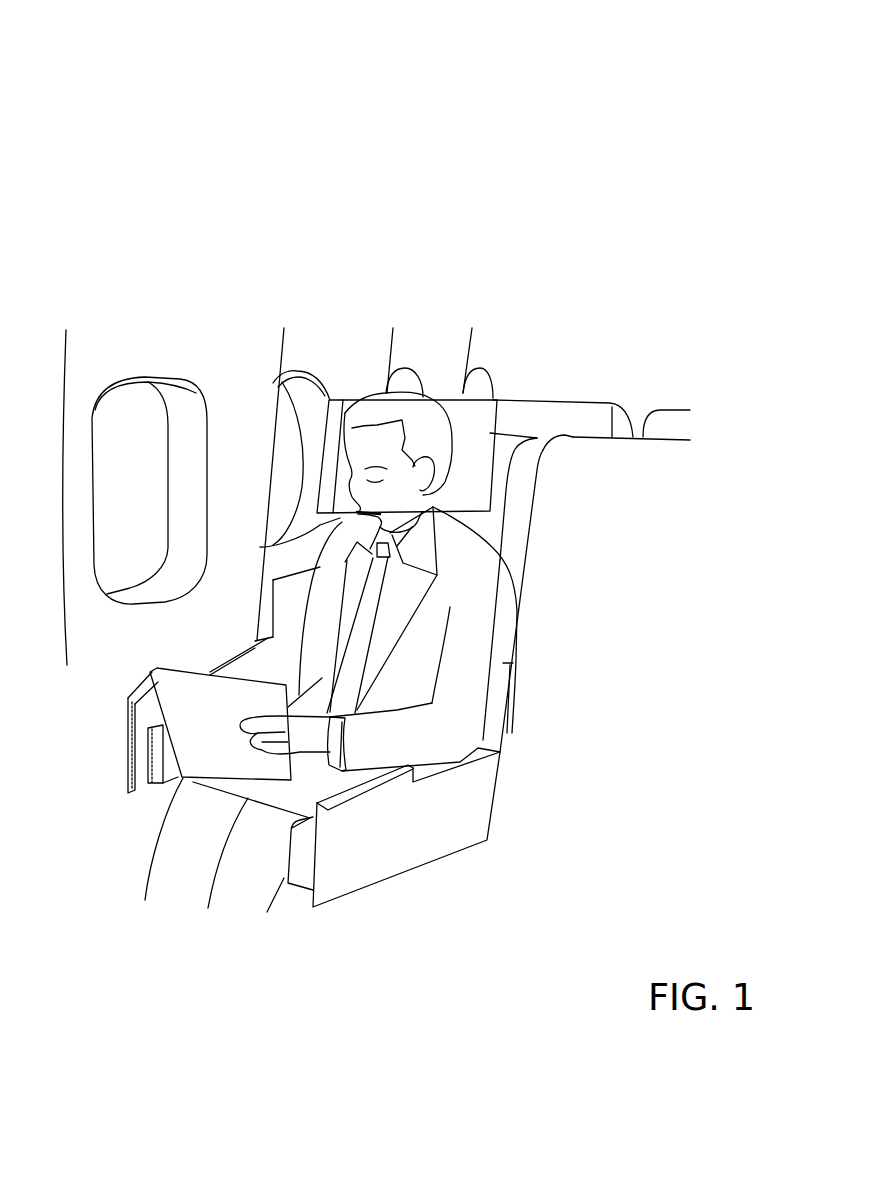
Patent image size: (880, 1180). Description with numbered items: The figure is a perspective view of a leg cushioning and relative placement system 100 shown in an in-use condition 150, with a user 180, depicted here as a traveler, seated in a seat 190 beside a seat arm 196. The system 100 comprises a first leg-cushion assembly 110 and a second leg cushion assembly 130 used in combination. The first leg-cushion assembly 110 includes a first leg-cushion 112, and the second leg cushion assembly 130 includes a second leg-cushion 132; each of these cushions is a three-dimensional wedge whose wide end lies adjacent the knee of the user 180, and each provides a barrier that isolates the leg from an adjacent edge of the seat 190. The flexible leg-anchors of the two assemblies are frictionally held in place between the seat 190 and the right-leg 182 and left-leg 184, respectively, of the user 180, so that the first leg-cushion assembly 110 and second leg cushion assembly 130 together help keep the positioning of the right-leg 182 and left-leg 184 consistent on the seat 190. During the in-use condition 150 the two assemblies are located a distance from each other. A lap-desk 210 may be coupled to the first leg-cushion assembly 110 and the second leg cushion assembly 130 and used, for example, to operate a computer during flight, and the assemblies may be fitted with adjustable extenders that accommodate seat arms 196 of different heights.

The leg cushioning and relative placement system 100 is at (572, 100).
The in-use condition 150 is at (602, 147).
The first leg-cushion assembly 110 is at (156, 769).
The first leg-cushion 112 is at (160, 780).
The user 180 is at (483, 594).
The right-leg 182 is at (209, 842).
The left-leg 184 is at (259, 876).
The seat 190 is at (379, 842).
The seat arm 196 is at (421, 827).
The lap-desk 210 is at (311, 784).
The second leg cushion assembly 130 is at (303, 863).
The second leg-cushion 132 is at (302, 842).